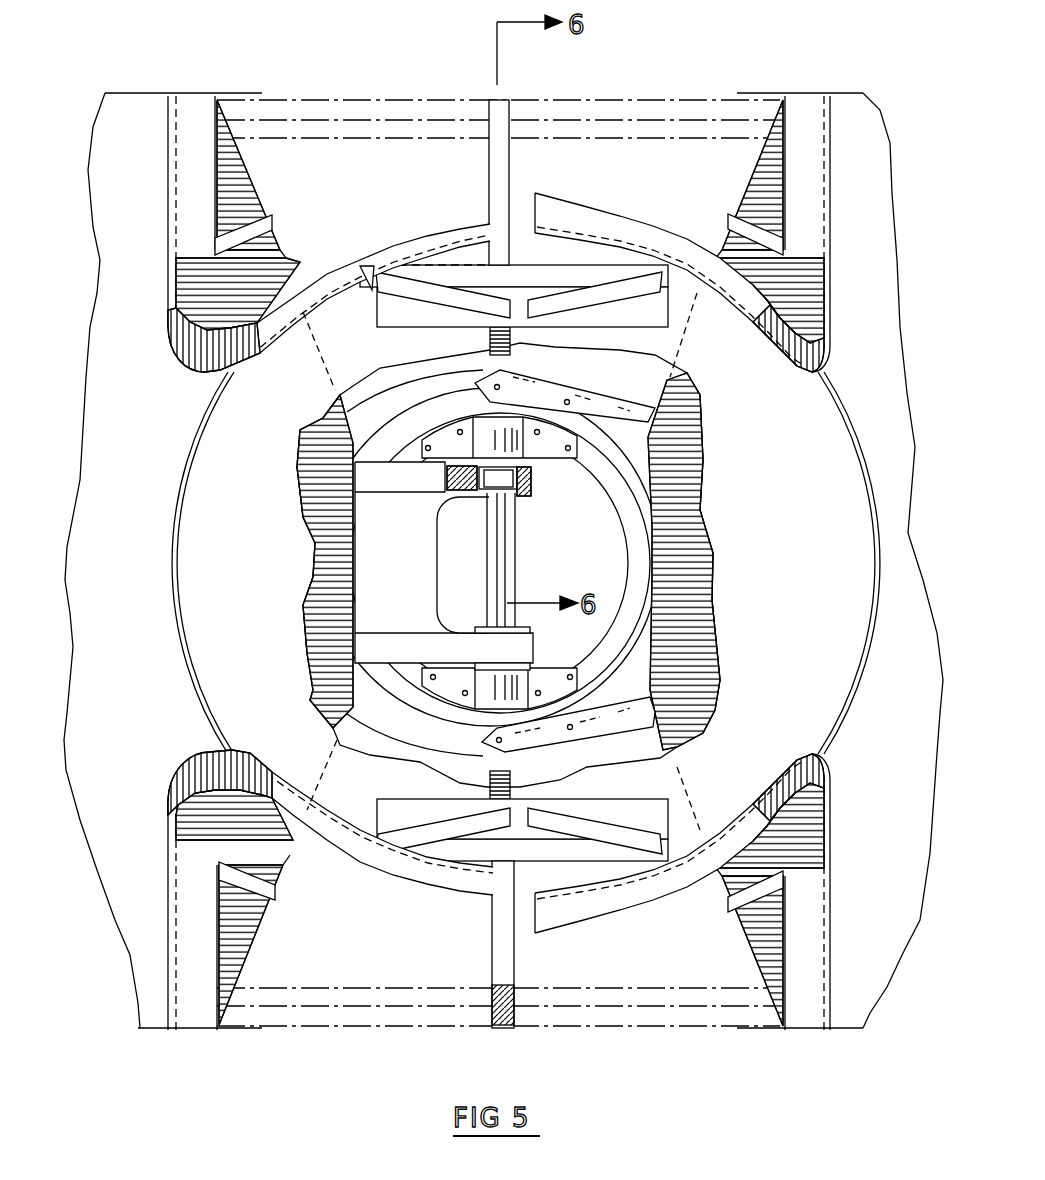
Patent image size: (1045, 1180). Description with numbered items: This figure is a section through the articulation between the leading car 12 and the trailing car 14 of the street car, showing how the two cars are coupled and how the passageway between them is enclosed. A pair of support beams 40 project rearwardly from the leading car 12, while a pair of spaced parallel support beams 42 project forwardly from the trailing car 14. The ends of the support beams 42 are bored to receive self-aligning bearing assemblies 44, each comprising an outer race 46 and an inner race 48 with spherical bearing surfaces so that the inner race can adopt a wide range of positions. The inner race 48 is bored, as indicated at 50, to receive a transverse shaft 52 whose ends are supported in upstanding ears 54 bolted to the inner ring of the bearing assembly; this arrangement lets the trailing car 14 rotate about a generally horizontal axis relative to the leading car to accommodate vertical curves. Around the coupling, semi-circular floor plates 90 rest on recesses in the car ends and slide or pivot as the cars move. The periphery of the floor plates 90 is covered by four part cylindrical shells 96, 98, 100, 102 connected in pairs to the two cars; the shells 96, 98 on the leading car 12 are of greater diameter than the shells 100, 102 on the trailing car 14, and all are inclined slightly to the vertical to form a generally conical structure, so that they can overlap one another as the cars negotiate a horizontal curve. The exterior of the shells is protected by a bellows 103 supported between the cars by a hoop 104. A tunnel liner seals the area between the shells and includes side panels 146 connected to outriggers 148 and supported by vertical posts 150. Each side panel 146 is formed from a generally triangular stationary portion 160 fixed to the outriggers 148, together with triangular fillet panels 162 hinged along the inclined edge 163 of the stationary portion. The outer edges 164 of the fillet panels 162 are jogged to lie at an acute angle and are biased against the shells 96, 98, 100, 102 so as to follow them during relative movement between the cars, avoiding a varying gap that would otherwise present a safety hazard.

The leading car 12 is at (840, 560).
The trailing car 14 is at (163, 560).
The support beams 40 is at (508, 563).
The support beams 42 is at (372, 480).
The self-aligning bearing assemblies 44 is at (522, 515).
The outer race 46 is at (522, 497).
The inner race 48 is at (498, 490).
The bore 50 is at (528, 480).
The transverse shaft 52 is at (522, 628).
The upstanding ears 54 is at (440, 443).
The floor plates 90 is at (526, 563).
The part cylindrical shell 96 is at (668, 248).
The part cylindrical shell 98 is at (633, 893).
The part cylindrical shell 100 is at (313, 300).
The part cylindrical shell 102 is at (443, 877).
The bellows 103 is at (383, 110).
The hoop 104 is at (490, 126).
The side panels 146 is at (437, 392).
The outriggers 148 is at (514, 563).
The vertical posts 150 is at (467, 300).
The stationary portion 160 is at (565, 568).
The fillet panels 162 is at (402, 305).
The inclined edge 163 is at (464, 252).
The outer edges 164 is at (526, 561).